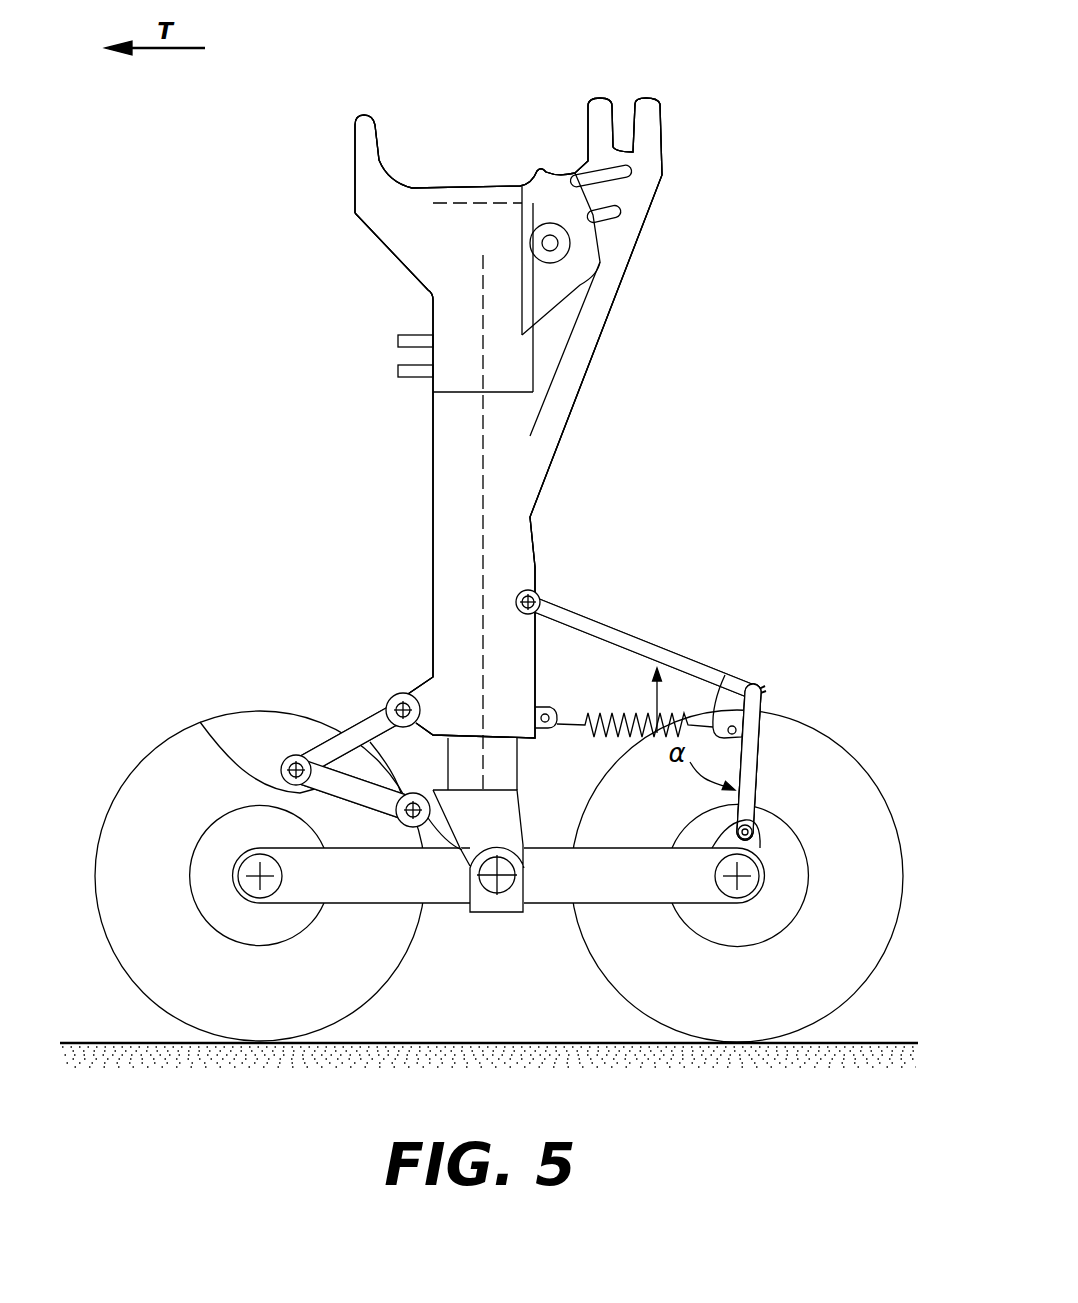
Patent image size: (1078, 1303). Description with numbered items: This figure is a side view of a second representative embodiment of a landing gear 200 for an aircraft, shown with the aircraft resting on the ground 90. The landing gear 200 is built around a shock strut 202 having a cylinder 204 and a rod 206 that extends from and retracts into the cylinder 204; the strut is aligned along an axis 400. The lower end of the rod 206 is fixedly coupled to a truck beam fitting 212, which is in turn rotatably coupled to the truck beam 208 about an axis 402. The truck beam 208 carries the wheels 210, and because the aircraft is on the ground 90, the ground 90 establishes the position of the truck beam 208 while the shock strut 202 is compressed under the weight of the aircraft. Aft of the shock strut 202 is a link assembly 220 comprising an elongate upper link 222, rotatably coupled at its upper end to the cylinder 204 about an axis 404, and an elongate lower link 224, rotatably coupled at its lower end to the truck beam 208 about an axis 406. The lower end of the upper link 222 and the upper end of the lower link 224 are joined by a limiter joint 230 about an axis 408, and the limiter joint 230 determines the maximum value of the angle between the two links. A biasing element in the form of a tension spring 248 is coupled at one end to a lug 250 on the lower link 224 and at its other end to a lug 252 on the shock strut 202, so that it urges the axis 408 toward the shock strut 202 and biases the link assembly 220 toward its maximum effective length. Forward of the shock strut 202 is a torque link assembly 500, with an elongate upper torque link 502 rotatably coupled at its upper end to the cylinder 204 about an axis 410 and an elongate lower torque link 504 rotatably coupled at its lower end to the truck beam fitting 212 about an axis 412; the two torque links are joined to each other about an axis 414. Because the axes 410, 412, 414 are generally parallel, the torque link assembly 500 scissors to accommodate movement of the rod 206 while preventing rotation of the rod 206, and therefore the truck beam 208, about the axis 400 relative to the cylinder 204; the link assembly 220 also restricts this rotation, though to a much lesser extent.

The ground 90 is at (108, 1041).
The landing gear 200 is at (212, 236).
The shock strut 202 is at (559, 518).
The cylinder 204 is at (433, 462).
The rod 206 is at (517, 763).
The truck beam 208 is at (460, 906).
The wheel 210 is at (118, 789).
The truck beam fitting 212 is at (535, 904).
The link assembly 220 is at (721, 625).
The upper link 222 is at (642, 633).
The lower link 224 is at (757, 757).
The limiter joint 230 is at (783, 673).
The tension spring 248 is at (633, 713).
The lug 250 is at (727, 681).
The lug 252 is at (552, 710).
The axis 400 is at (483, 546).
The axis 402 is at (502, 890).
The axis 404 is at (538, 597).
The axis 406 is at (765, 822).
The axis 408 is at (765, 689).
The axis 410 is at (398, 698).
The axis 412 is at (410, 824).
The axis 414 is at (315, 748).
The torque link assembly 500 is at (335, 705).
The upper torque link 502 is at (287, 758).
The lower torque link 504 is at (225, 748).